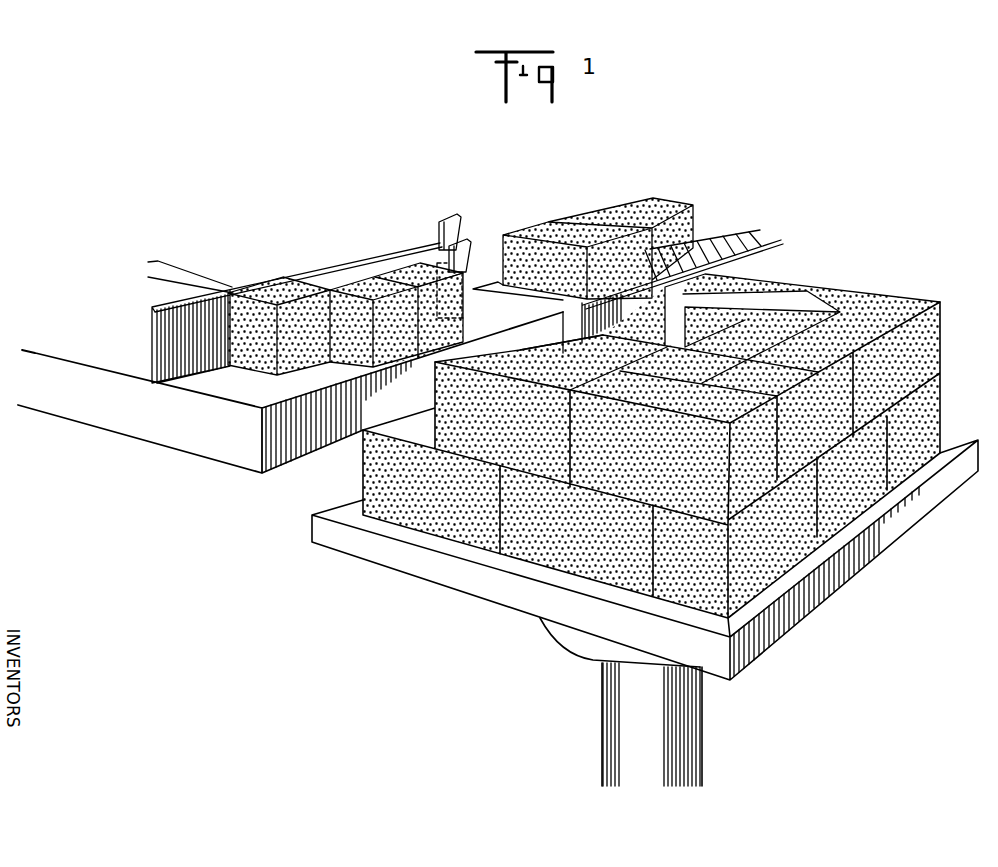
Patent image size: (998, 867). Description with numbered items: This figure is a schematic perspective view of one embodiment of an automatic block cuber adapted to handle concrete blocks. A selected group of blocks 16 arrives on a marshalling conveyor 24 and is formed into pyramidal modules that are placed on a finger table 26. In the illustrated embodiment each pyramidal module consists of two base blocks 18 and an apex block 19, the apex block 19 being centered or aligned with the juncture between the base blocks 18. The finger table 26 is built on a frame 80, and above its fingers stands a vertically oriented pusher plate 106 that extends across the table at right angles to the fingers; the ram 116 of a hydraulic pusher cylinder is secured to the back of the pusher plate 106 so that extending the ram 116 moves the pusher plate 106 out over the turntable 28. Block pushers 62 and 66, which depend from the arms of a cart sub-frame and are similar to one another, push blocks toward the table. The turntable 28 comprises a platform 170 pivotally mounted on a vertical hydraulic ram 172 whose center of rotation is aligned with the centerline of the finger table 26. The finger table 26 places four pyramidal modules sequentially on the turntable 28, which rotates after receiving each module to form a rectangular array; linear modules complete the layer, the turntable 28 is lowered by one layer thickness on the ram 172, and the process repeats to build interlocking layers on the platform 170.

The blocks 16 is at (579, 196).
The base blocks 18 is at (249, 353).
The apex block 19 is at (353, 344).
The marshalling conveyor 24 is at (733, 232).
The finger table 26 is at (115, 283).
The turntable 28 is at (857, 629).
The block pusher 62 is at (436, 262).
The block pusher 66 is at (466, 318).
The frame 80 is at (116, 418).
The pusher plate 106 is at (152, 341).
The ram 116 is at (217, 277).
The platform 170 is at (432, 577).
The vertical hydraulic ram 172 is at (623, 724).